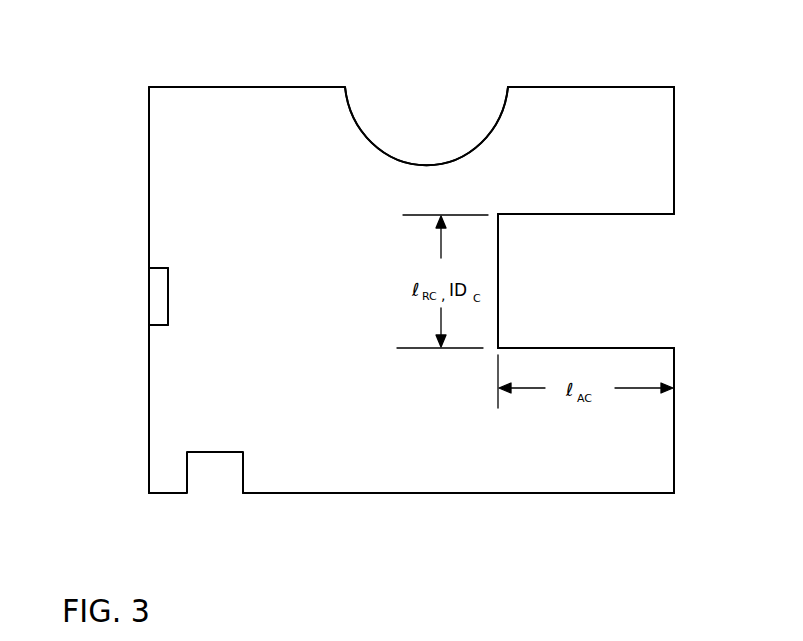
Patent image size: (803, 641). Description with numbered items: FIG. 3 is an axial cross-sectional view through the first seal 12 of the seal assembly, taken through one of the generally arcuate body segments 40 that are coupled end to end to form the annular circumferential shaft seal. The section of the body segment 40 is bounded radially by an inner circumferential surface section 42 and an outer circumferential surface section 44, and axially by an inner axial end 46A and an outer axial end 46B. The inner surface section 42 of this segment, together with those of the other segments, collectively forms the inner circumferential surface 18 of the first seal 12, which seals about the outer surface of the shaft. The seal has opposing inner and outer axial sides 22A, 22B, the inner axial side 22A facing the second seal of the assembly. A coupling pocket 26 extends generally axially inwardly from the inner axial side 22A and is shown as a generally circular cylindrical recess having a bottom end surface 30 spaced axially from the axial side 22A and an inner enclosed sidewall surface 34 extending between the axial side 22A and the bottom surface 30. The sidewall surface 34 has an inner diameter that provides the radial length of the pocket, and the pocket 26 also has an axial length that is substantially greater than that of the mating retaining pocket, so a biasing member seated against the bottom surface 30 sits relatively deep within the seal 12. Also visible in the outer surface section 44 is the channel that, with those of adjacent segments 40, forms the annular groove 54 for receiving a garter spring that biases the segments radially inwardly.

The first seal 12 is at (82, 104).
The arcuate body segment 40 is at (126, 193).
The outer circumferential surface section 44 is at (585, 88).
The inner axial side 22A is at (676, 160).
The annular groove 54 is at (372, 158).
The bottom end surface 30 is at (498, 262).
The inner enclosed sidewall surface 34 is at (612, 214).
The coupling pocket 26 is at (644, 303).
The inner axial end 46A is at (675, 447).
The inner circumferential surface section 42 is at (548, 495).
The inner circumferential surface 18 is at (445, 494).
The outer axial side 22B is at (149, 422).
The outer axial end 46B is at (149, 362).